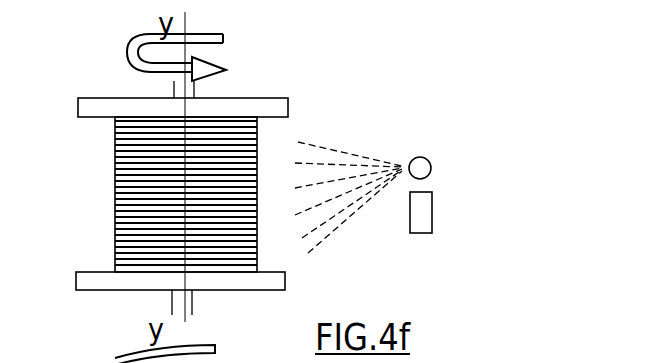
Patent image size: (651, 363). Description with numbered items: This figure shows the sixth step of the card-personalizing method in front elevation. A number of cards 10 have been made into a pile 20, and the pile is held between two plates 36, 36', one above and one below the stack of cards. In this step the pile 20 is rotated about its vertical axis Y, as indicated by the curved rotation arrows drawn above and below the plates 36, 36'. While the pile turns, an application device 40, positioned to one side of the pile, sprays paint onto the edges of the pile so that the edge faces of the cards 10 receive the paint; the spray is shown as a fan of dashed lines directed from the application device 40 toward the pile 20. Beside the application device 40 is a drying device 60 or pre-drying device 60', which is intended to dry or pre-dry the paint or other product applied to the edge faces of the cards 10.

The cards 10 is at (116, 135).
The pile 20 is at (100, 208).
The plate 36 is at (183, 83).
The plate 36' is at (153, 296).
The application device 40 is at (424, 172).
The drying device 60 is at (475, 223).
The pre-drying device 60' is at (421, 212).